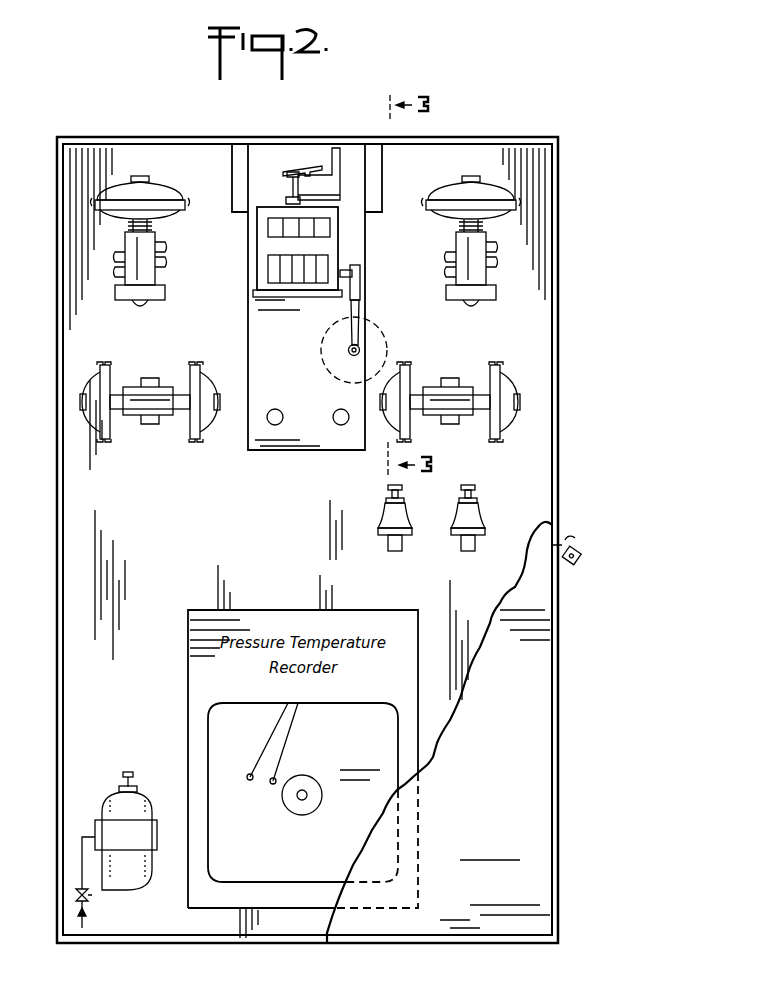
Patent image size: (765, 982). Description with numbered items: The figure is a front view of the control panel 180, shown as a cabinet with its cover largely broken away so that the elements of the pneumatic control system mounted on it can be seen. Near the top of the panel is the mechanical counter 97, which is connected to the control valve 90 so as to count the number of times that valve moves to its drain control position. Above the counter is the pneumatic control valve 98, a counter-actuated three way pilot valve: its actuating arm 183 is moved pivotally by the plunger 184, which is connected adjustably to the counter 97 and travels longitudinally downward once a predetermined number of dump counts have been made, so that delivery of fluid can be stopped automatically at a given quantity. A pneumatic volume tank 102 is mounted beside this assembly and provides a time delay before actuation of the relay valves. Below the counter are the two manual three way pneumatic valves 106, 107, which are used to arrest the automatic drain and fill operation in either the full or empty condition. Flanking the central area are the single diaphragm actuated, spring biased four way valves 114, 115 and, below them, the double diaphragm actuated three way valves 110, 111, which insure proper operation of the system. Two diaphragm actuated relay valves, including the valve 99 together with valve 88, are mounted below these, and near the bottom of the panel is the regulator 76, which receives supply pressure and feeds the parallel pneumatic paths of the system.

The control panel 180 is at (487, 155).
The pneumatic volume tank 102 is at (375, 185).
The pneumatic control valve 98 is at (333, 177).
The actuating arm 183 is at (315, 153).
The plunger 184 is at (293, 187).
The mechanical counter 97 is at (330, 245).
The control valve 90 is at (370, 342).
The manual three way pneumatic valve 106 is at (282, 405).
The manual three way pneumatic valve 107 is at (344, 405).
The single diaphragm actuated four way valve 114 is at (172, 237).
The single diaphragm actuated four way valve 115 is at (500, 238).
The double diaphragm actuated three way pneumatic valve 110 is at (137, 431).
The double diaphragm actuated three way pneumatic valve 111 is at (467, 428).
The bell signal 88 is at (384, 509).
The diaphragm actuated pneumatic valve 99 is at (476, 506).
The regulator 76 is at (136, 882).